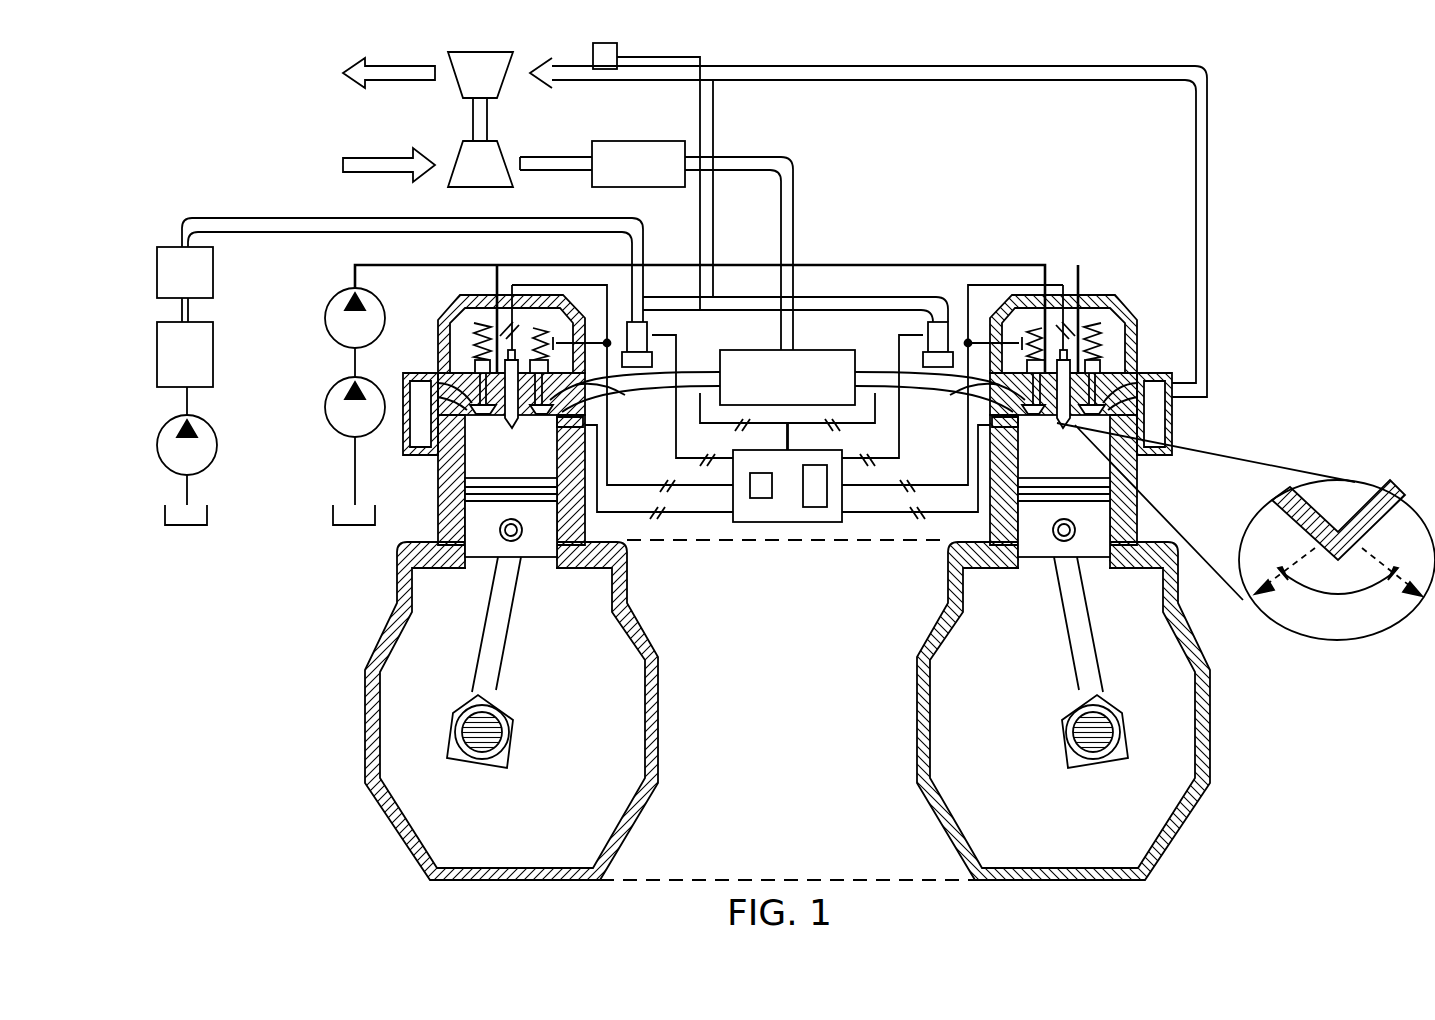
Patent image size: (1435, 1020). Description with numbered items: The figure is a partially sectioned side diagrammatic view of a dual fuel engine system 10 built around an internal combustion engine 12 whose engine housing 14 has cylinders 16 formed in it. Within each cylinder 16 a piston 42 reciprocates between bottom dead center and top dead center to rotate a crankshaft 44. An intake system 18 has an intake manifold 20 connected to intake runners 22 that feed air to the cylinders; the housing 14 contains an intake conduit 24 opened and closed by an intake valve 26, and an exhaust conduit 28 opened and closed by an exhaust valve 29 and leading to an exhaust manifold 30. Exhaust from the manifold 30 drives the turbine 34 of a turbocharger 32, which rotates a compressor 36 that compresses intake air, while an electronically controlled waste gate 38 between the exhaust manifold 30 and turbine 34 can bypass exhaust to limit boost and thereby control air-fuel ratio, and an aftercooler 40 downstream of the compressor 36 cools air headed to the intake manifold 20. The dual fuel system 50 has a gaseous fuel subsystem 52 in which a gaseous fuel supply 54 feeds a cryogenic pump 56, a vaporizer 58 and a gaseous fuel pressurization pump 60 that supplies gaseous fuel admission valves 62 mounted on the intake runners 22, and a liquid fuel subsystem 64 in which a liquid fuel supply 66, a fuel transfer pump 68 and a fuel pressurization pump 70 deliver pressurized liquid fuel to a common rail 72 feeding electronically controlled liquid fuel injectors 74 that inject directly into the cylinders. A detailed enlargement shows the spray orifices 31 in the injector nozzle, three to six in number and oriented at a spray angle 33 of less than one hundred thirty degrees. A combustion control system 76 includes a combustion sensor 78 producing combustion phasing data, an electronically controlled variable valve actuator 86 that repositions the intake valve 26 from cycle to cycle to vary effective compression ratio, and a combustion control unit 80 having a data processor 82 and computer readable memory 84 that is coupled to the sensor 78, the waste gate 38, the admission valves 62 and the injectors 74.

The dual fuel engine system 10 is at (138, 126).
The internal combustion engine 12 is at (342, 626).
The engine housing 14 is at (365, 660).
The cylinder 16 is at (455, 460).
The intake system 18 is at (828, 188).
The intake manifold 20 is at (815, 350).
The intake runner 22 is at (652, 392).
The intake conduit 24 is at (787, 398).
The intake valve 26 is at (540, 425).
The exhaust conduit 28 is at (440, 388).
The exhaust valve 29 is at (478, 425).
The exhaust manifold 30 is at (433, 373).
The spray orifices 31 is at (1298, 535).
The turbocharger 32 is at (485, 40).
The spray angle 33 is at (1338, 584).
The turbine 34 is at (452, 52).
The compressor 36 is at (463, 141).
The waste gate 38 is at (593, 50).
The aftercooler 40 is at (640, 141).
The piston 42 is at (485, 535).
The crankshaft 44 is at (508, 732).
The dual fuel system 50 is at (212, 558).
The gaseous fuel subsystem 52 is at (150, 413).
The gaseous fuel supply 54 is at (207, 513).
The cryogenic pump 56 is at (217, 443).
The vaporizer 58 is at (213, 348).
The gaseous fuel pressurization pump 60 is at (213, 270).
The gaseous fuel admission valve 62 is at (652, 340).
The liquid fuel subsystem 64 is at (328, 452).
The liquid fuel supply 66 is at (375, 513).
The fuel transfer pump 68 is at (325, 403).
The fuel pressurization pump 70 is at (325, 316).
The common rail 72 is at (927, 265).
The liquid fuel injector 74 is at (510, 424).
The combustion control system 76 is at (855, 526).
The combustion sensor 78 is at (580, 430).
The combustion control unit 80 is at (793, 522).
The data processor 82 is at (762, 473).
The computer readable memory 84 is at (816, 465).
The variable valve actuator 86 is at (540, 325).